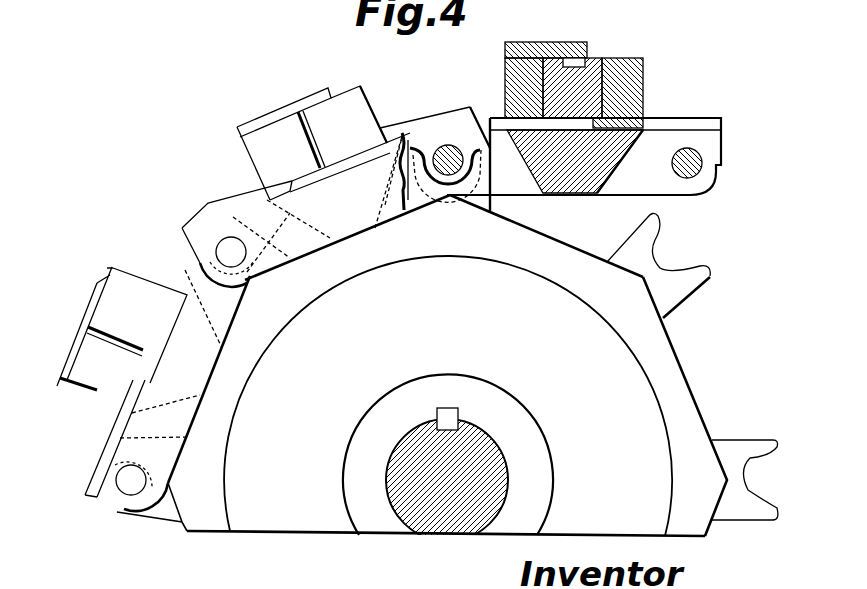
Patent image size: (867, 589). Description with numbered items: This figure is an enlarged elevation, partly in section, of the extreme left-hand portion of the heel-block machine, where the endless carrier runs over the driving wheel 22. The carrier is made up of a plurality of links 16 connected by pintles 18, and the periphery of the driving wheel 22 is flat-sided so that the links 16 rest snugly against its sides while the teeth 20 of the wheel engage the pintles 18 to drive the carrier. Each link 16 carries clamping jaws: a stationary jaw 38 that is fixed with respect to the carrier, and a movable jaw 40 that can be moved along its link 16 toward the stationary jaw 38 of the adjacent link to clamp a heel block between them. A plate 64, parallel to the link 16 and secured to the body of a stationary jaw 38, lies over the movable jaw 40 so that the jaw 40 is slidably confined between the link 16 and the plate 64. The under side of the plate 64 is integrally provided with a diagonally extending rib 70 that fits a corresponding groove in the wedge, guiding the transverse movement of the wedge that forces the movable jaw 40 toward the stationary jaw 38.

The links 16 is at (290, 0).
The pintles 18 is at (108, 483).
The teeth 20 is at (484, 191).
The driving wheel 22 is at (680, 384).
The stationary jaw 38 is at (236, 154).
The movable jaw 40 is at (374, 111).
The plate 64 is at (291, 98).
The rib 70 is at (585, 64).